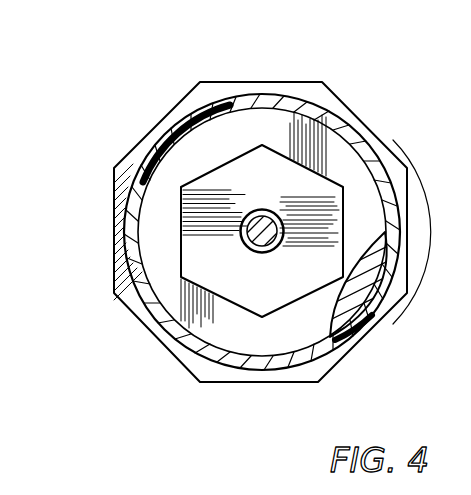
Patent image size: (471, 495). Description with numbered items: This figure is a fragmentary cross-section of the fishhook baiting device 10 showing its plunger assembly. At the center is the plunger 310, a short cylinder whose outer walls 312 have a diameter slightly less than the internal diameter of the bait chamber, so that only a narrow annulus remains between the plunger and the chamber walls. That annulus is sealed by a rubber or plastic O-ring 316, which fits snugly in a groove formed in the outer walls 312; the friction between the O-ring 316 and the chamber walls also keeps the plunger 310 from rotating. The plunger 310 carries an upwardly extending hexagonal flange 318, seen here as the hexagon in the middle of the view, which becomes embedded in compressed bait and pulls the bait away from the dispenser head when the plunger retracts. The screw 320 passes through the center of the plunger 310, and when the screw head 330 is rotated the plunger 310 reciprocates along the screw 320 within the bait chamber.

The fishhook baiting device 10 is at (168, 103).
The plunger 310 is at (221, 138).
The outer walls 312 is at (338, 165).
The O-ring 316 is at (382, 270).
The hexagonal flange 318 is at (322, 209).
The screw 320 is at (262, 252).
The screw head 330 is at (122, 283).